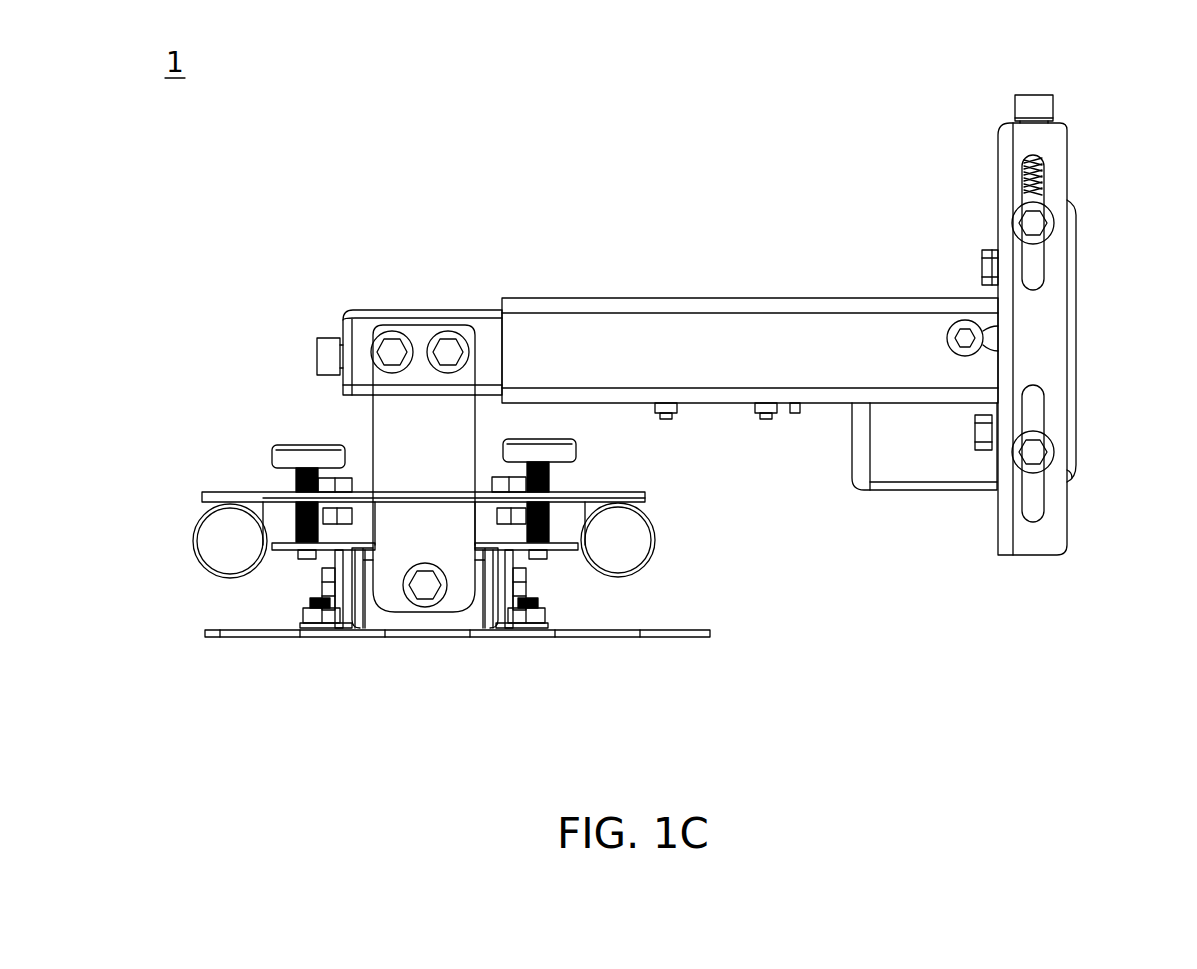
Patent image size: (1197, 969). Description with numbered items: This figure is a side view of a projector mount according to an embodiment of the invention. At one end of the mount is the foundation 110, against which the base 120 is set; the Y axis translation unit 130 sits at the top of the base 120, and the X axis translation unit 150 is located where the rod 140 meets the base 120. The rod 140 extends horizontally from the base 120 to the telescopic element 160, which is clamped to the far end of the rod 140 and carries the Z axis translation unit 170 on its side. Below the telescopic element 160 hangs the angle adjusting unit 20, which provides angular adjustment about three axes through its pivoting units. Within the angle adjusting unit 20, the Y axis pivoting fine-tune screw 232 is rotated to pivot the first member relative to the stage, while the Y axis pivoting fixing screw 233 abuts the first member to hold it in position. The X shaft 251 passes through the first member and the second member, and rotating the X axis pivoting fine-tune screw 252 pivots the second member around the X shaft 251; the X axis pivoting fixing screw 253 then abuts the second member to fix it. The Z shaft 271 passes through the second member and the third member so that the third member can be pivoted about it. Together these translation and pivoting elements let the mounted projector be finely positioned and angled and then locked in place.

The angle adjusting unit 20 is at (156, 462).
The foundation 110 is at (1075, 345).
The base 120 is at (1058, 145).
The Y axis translation unit 130 is at (1043, 105).
The rod 140 is at (830, 335).
The X axis translation unit 150 is at (965, 340).
The telescopic element 160 is at (425, 322).
The Z axis translation unit 170 is at (325, 338).
The Y axis pivoting fine-tune screw 232 is at (630, 552).
The Y axis pivoting fixing screw 233 is at (220, 555).
The X shaft 251 is at (425, 588).
The X axis pivoting fine-tune screw 252 is at (292, 456).
The X axis pivoting fixing screw 253 is at (548, 450).
The Z shaft 271 is at (327, 590).